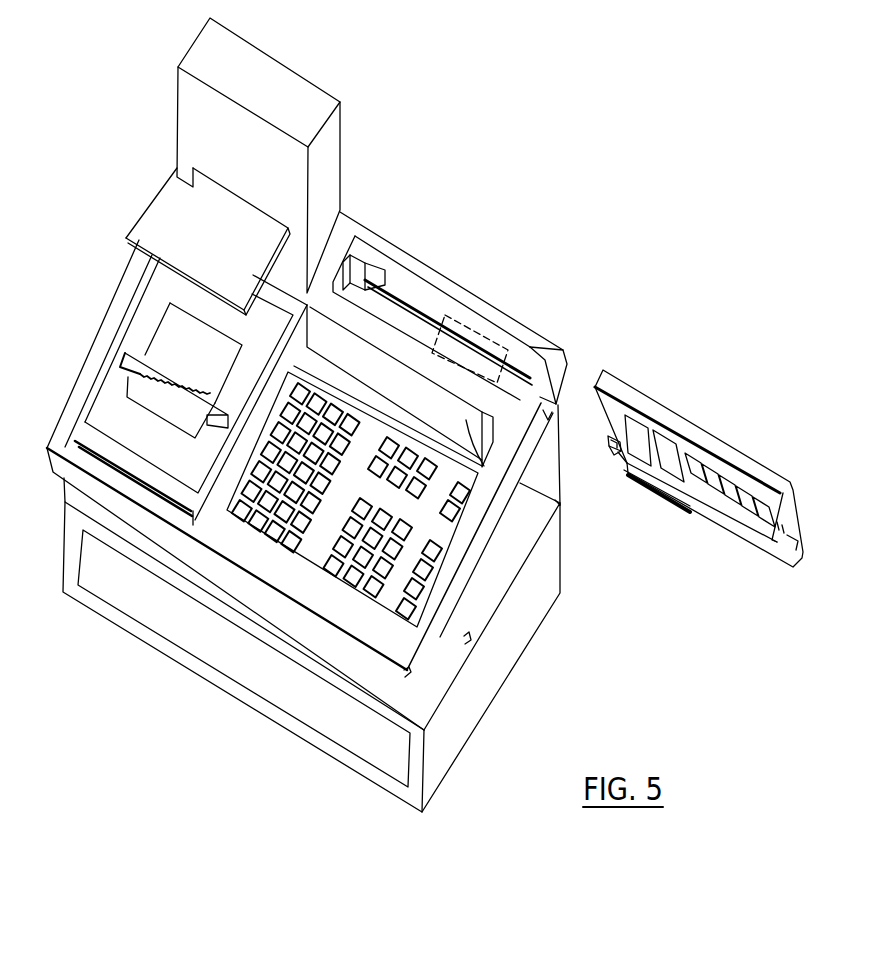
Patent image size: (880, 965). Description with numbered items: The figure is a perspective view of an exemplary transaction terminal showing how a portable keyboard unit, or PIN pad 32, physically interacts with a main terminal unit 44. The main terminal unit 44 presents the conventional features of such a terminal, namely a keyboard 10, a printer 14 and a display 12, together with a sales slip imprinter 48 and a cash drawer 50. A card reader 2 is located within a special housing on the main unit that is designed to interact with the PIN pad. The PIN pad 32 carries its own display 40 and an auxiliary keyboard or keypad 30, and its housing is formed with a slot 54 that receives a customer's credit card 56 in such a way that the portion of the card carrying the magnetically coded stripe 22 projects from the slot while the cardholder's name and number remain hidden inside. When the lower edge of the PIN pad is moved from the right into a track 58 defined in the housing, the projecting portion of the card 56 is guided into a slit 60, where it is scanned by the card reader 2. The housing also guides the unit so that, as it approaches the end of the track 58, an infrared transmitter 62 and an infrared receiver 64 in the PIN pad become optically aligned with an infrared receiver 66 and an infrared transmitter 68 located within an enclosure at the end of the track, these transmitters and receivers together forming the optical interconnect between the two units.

The card reader 2 is at (488, 318).
The keyboard 10 is at (298, 492).
The display 12 is at (482, 466).
The printer 14 is at (112, 397).
The magnetically coded stripe 22 is at (650, 490).
The auxiliary keyboard or keypad 30 is at (722, 492).
The portable keyboard unit or PIN pad 32 is at (684, 462).
The display 40 is at (633, 428).
The main terminal unit 44 is at (107, 287).
The sales slip imprinter 48 is at (311, 78).
The cash drawer 50 is at (517, 623).
The slot 54 is at (656, 438).
The customer's credit card 56 is at (665, 508).
The track 58 is at (551, 416).
The slit 60 is at (523, 360).
The infrared transmitter 62 is at (607, 439).
The infrared receiver 64 is at (612, 450).
The infrared receiver 66 is at (370, 252).
The infrared transmitter 68 is at (388, 266).